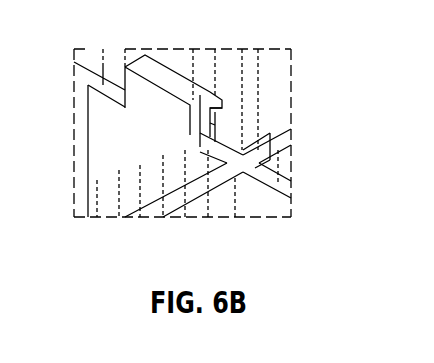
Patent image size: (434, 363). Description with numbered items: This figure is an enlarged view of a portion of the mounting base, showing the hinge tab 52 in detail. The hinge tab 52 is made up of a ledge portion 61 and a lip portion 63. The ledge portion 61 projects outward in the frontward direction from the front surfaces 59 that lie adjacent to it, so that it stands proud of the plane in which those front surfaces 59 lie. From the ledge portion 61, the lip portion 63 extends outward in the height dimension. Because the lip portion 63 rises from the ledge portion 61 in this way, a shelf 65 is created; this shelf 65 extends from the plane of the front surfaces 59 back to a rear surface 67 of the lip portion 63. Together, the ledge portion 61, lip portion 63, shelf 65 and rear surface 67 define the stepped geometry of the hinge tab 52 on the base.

The hinge tab 52 is at (187, 54).
The front surfaces 59 is at (92, 70).
The ledge portion 61 is at (173, 115).
The lip portion 63 is at (222, 101).
The shelf 65 is at (230, 123).
The rear surface 67 is at (223, 102).